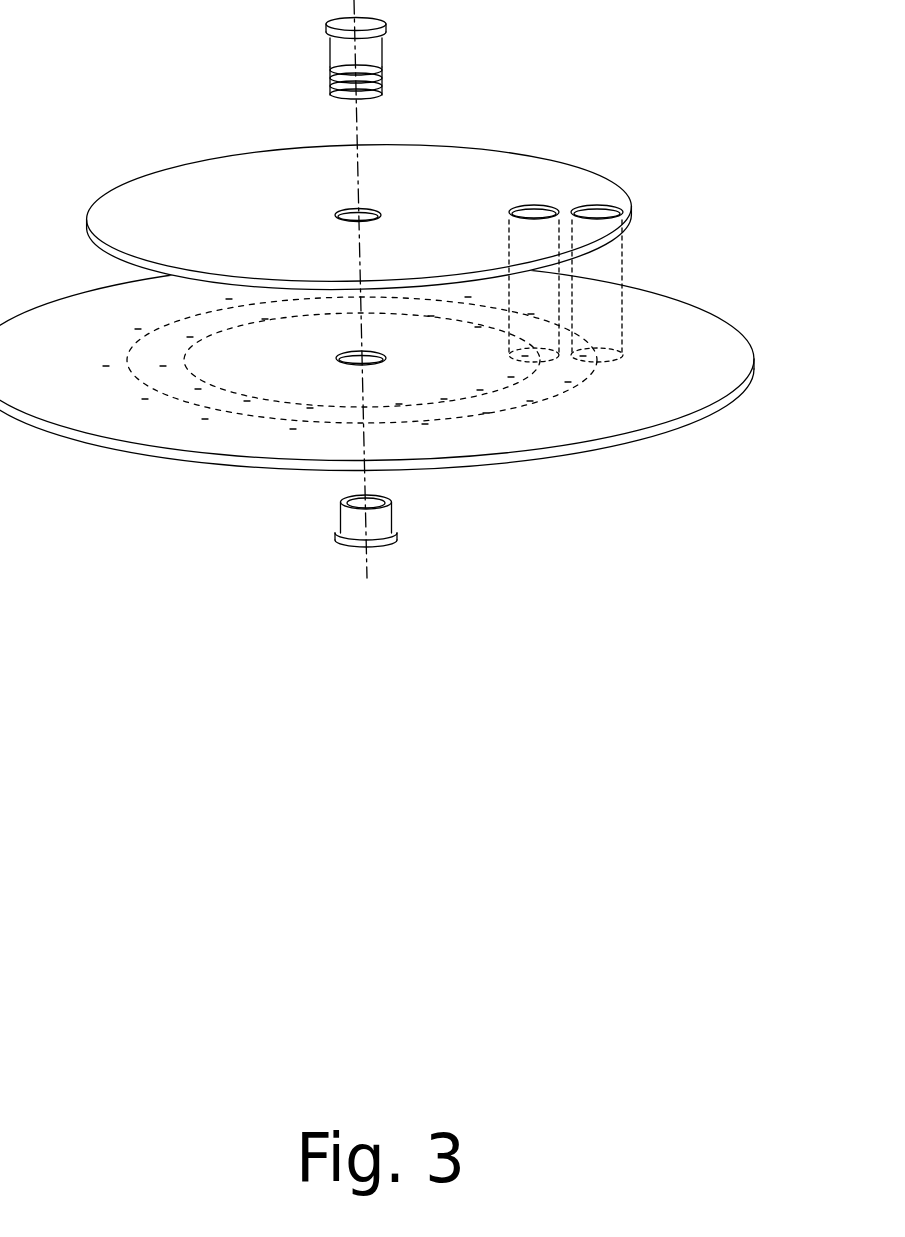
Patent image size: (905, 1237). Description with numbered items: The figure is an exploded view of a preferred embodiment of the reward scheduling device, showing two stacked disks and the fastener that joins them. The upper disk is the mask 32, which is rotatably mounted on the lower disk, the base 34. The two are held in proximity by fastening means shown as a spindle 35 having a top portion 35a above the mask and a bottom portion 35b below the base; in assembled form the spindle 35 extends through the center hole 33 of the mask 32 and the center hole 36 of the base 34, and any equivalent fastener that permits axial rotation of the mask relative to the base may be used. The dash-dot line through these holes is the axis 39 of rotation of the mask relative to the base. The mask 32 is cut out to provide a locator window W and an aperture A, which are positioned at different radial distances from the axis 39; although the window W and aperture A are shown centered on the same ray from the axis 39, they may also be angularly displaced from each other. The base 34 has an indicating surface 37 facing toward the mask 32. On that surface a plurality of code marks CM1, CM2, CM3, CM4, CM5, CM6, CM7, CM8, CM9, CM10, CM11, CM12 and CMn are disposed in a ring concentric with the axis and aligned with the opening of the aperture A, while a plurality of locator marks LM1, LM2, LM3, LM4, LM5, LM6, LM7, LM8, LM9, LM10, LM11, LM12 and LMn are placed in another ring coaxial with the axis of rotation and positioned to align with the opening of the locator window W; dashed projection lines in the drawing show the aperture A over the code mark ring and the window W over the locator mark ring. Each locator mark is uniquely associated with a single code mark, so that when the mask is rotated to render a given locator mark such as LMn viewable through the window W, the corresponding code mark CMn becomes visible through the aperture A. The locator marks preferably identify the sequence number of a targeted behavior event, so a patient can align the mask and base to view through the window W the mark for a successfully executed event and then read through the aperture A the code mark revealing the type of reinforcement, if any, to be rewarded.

The mask 32 is at (358, 199).
The center hole of the mask 33 is at (347, 209).
The base 34 is at (377, 365).
The spindle 35 is at (356, 280).
The top portion of spindle 35a is at (330, 18).
The bottom portion of spindle 35b is at (340, 506).
The center hole of the base 36 is at (383, 352).
The indicating surface 37 is at (675, 395).
The axis of rotation 39 is at (360, 175).
The aperture A is at (545, 206).
The locator window W is at (607, 207).
The locator mark LM1 is at (544, 313).
The locator mark LM2 is at (596, 355).
The locator mark LM3 is at (581, 381).
The locator mark LM4 is at (543, 400).
The locator mark LM5 is at (499, 412).
The locator mark LM6 is at (438, 423).
The locator mark LM7 is at (306, 428).
The locator mark LM8 is at (218, 418).
The locator mark LM9 is at (158, 398).
The locator mark LM10 is at (123, 365).
The locator mark LM11 is at (155, 328).
The locator mark LM12 is at (246, 299).
The locator mark LMn is at (481, 296).
The code mark CM1 is at (492, 326).
The code mark CM2 is at (539, 355).
The code mark CM3 is at (525, 376).
The code mark CM4 is at (494, 389).
The code mark CM5 is at (458, 398).
The code mark CM6 is at (413, 403).
The code mark CM7 is at (324, 407).
The code mark CM8 is at (261, 400).
The code mark CM9 is at (212, 388).
The code mark CM10 is at (181, 365).
The code mark CM11 is at (208, 336).
The code mark CM12 is at (283, 318).
The code mark CMn is at (445, 315).